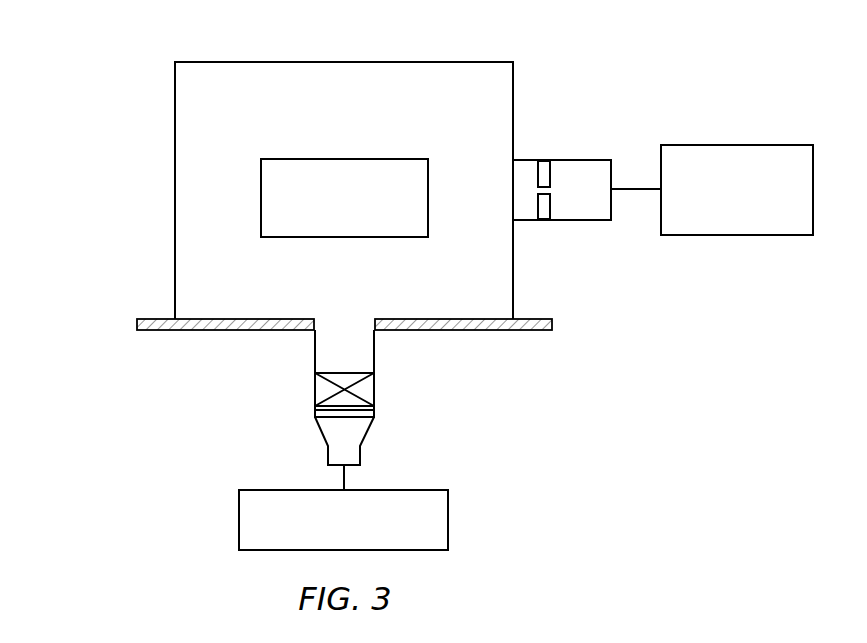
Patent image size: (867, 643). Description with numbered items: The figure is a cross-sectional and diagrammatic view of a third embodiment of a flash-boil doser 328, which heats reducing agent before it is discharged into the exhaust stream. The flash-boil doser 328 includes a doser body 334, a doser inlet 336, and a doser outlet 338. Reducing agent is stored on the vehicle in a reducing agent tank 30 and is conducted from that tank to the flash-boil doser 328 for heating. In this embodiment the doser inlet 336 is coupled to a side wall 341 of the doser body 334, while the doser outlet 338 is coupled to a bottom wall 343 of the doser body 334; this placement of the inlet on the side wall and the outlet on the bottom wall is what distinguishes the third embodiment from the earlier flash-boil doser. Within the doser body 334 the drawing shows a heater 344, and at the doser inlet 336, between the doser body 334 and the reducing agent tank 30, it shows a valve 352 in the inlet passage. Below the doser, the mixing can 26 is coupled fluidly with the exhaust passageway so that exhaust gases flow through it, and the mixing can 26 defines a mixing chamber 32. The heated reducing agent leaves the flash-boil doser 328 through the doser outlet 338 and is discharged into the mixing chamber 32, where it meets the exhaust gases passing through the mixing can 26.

The flash-boil doser 328 is at (117, 58).
The doser body 334 is at (157, 131).
The side wall 341 is at (513, 93).
The heater 344 is at (260, 197).
The doser inlet 336 is at (581, 146).
The valve 352 is at (552, 226).
The reducing agent tank 30 is at (736, 236).
The bottom wall 343 is at (218, 318).
The mixing can 26 is at (540, 318).
The doser outlet 338 is at (402, 371).
The mixing chamber 32 is at (448, 520).